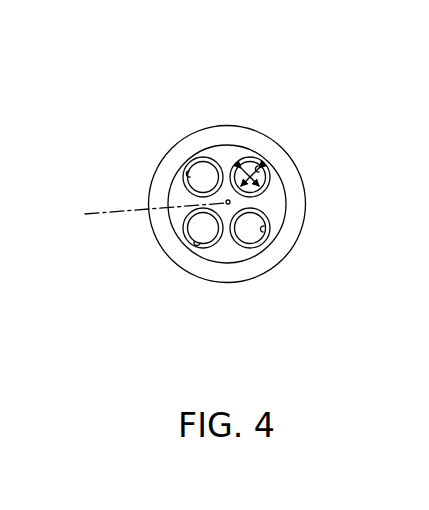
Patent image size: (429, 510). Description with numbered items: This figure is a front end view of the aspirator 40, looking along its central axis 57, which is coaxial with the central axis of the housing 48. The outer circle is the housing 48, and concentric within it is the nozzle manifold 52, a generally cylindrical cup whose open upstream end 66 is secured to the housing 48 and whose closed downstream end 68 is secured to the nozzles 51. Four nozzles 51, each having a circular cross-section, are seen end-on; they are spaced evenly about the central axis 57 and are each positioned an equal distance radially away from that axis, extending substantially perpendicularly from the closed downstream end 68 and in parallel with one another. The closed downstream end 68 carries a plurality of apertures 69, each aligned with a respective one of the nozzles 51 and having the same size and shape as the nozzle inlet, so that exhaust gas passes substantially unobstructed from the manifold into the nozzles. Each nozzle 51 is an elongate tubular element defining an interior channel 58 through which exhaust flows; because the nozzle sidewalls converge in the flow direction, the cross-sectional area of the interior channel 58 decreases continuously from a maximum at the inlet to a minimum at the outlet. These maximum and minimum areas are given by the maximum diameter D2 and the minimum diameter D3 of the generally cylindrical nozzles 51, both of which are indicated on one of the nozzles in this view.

The aspirator 40 is at (305, 176).
The housing 48 is at (158, 240).
The nozzle 51 is at (192, 166).
The nozzle manifold 52 is at (226, 259).
The central axis 57 is at (145, 214).
The interior channel 58 is at (247, 173).
The open upstream end 66 is at (169, 186).
The closed downstream end 68 is at (243, 256).
The aperture 69 is at (190, 172).
The maximum diameter D2 is at (270, 177).
The minimum diameter D3 is at (239, 165).